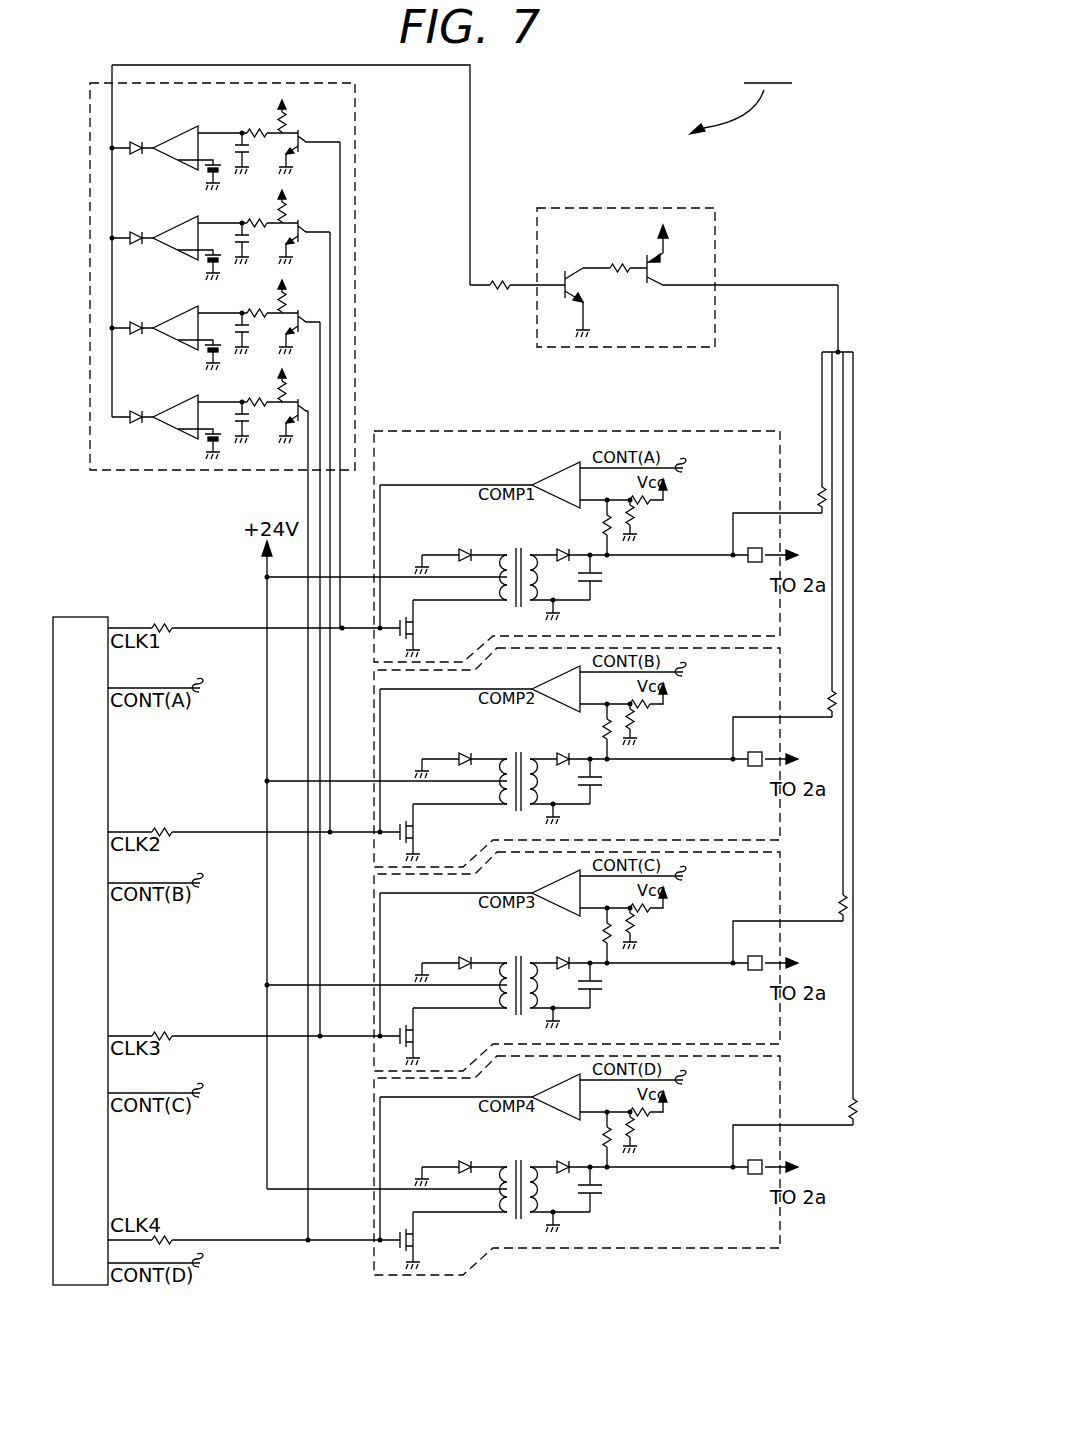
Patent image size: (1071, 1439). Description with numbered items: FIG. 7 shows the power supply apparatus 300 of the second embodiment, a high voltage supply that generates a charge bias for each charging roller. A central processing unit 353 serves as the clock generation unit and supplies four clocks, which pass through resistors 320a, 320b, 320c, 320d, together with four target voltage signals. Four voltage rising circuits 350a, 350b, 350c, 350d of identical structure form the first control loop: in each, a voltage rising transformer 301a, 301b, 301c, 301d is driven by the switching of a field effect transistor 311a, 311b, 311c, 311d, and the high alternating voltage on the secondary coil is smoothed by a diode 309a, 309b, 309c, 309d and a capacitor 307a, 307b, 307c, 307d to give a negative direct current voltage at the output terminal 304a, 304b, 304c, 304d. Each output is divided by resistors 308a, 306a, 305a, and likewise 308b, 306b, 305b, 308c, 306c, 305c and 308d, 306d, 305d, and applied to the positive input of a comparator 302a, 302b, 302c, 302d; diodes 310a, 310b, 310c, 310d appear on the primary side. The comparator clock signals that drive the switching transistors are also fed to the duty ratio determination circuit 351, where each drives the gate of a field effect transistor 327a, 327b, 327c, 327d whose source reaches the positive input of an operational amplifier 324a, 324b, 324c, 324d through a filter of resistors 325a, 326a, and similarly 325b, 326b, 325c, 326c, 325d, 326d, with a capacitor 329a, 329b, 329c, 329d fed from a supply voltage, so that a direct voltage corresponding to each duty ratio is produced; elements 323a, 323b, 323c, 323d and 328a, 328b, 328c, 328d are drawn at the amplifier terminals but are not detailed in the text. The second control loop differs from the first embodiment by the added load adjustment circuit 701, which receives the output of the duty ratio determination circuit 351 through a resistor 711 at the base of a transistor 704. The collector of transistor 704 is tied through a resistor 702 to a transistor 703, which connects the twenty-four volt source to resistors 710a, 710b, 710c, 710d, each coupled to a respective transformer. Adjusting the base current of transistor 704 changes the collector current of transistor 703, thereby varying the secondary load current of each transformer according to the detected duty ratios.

The power supply apparatus 300 is at (741, 95).
The duty ratio determination circuit 351 is at (357, 129).
The CPU 353 is at (102, 616).
The load adjustment circuit 701 is at (536, 226).
The resistor 702 is at (613, 264).
The transistor 703 is at (662, 272).
The transistor 704 is at (570, 266).
The resistor 711 is at (500, 278).
The diode 323a is at (138, 140).
The diode 323b is at (136, 230).
The diode 323c is at (136, 320).
The diode 323d is at (136, 409).
The operational amplifier 324a is at (180, 130).
The operational amplifier 324b is at (178, 225).
The operational amplifier 324c is at (178, 320).
The operational amplifier 324d is at (178, 409).
The resistor 325a is at (250, 129).
The resistor 325b is at (250, 224).
The resistor 325c is at (253, 319).
The resistor 325d is at (250, 408).
The resistor 326a is at (288, 110).
The resistor 326b is at (291, 200).
The resistor 326c is at (283, 290).
The resistor 326d is at (286, 383).
The FET 327a is at (298, 156).
The FET 327b is at (296, 246).
The FET 327c is at (303, 325).
The FET 327d is at (302, 423).
The reference voltage source 328a is at (204, 167).
The reference voltage source 328b is at (204, 257).
The reference voltage source 328c is at (204, 347).
The reference voltage source 328d is at (208, 443).
The capacitor 329a is at (236, 149).
The capacitor 329b is at (236, 239).
The capacitor 329c is at (236, 329).
The capacitor 329d is at (245, 434).
The resistor 320a is at (172, 634).
The resistor 320b is at (173, 828).
The resistor 320c is at (173, 1032).
The resistor 320d is at (173, 1232).
The voltage rising circuit 350a is at (782, 430).
The voltage rising circuit 350b is at (780, 660).
The voltage rising circuit 350c is at (780, 868).
The voltage rising circuit 350d is at (780, 1070).
The voltage rising transformer 301a is at (510, 548).
The voltage rising transformer 301b is at (510, 752).
The voltage rising transformer 301c is at (510, 956).
The voltage rising transformer 301d is at (510, 1160).
The comparator 302a is at (531, 473).
The comparator 302b is at (531, 677).
The comparator 302c is at (531, 881).
The comparator 302d is at (531, 1085).
The output terminal 304a is at (750, 565).
The output terminal 304b is at (750, 769).
The output terminal 304c is at (750, 973).
The output terminal 304d is at (750, 1177).
The resistor 305a is at (652, 508).
The resistor 305b is at (652, 712).
The resistor 305c is at (652, 916).
The resistor 305d is at (652, 1120).
The resistor 306a is at (641, 528).
The resistor 306b is at (641, 732).
The resistor 306c is at (641, 936).
The resistor 306d is at (641, 1140).
The capacitor 307a is at (604, 583).
The capacitor 307b is at (604, 787).
The capacitor 307c is at (604, 991).
The capacitor 307d is at (604, 1195).
The resistor 308a is at (604, 518).
The resistor 308b is at (604, 722).
The resistor 308c is at (604, 926).
The resistor 308d is at (604, 1130).
The diode 309a is at (550, 548).
The diode 309b is at (550, 752).
The diode 309c is at (550, 956).
The diode 309d is at (550, 1160).
The diode 310a is at (442, 548).
The diode 310b is at (442, 752).
The diode 310c is at (442, 956).
The diode 310d is at (442, 1160).
The FET 311a is at (419, 628).
The FET 311b is at (419, 832).
The FET 311c is at (419, 1036).
The FET 311d is at (419, 1240).
The resistor 710a is at (817, 497).
The resistor 710b is at (831, 707).
The resistor 710c is at (840, 911).
The resistor 710d is at (850, 1115).